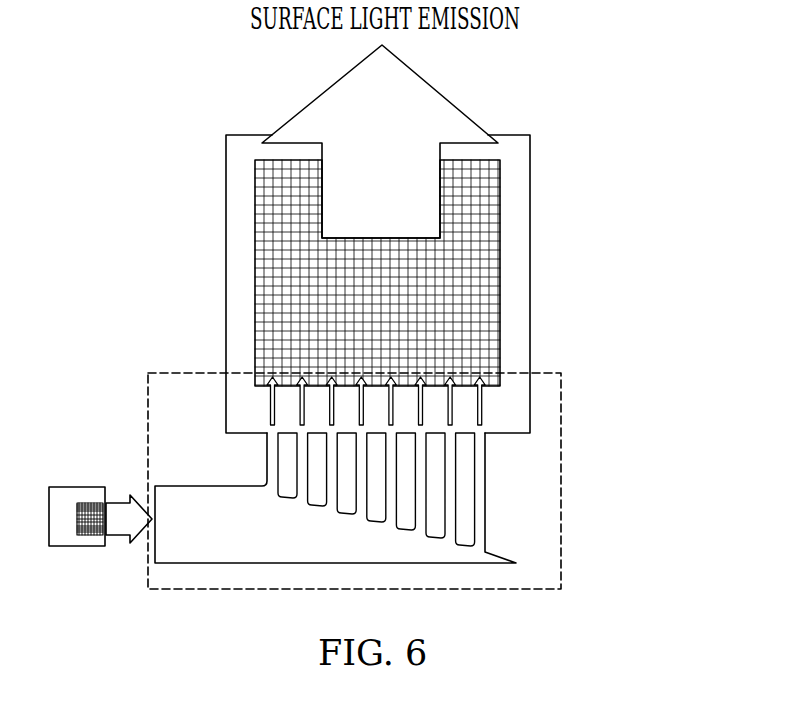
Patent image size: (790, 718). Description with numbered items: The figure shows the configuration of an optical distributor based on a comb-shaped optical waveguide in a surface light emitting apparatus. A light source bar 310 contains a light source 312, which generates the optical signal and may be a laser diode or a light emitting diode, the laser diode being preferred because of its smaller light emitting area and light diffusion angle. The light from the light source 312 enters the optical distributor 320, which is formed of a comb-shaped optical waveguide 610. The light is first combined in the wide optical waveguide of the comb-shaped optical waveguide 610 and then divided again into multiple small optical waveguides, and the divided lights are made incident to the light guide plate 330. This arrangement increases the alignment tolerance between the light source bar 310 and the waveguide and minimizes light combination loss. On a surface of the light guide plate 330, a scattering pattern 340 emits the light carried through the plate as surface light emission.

The light source bar 310 is at (67, 498).
The light source 312 is at (90, 535).
The optical distributor 320 is at (561, 475).
The light guide plate 330 is at (523, 245).
The scattering pattern 340 is at (488, 213).
The comb-shaped optical waveguide 610 is at (267, 459).